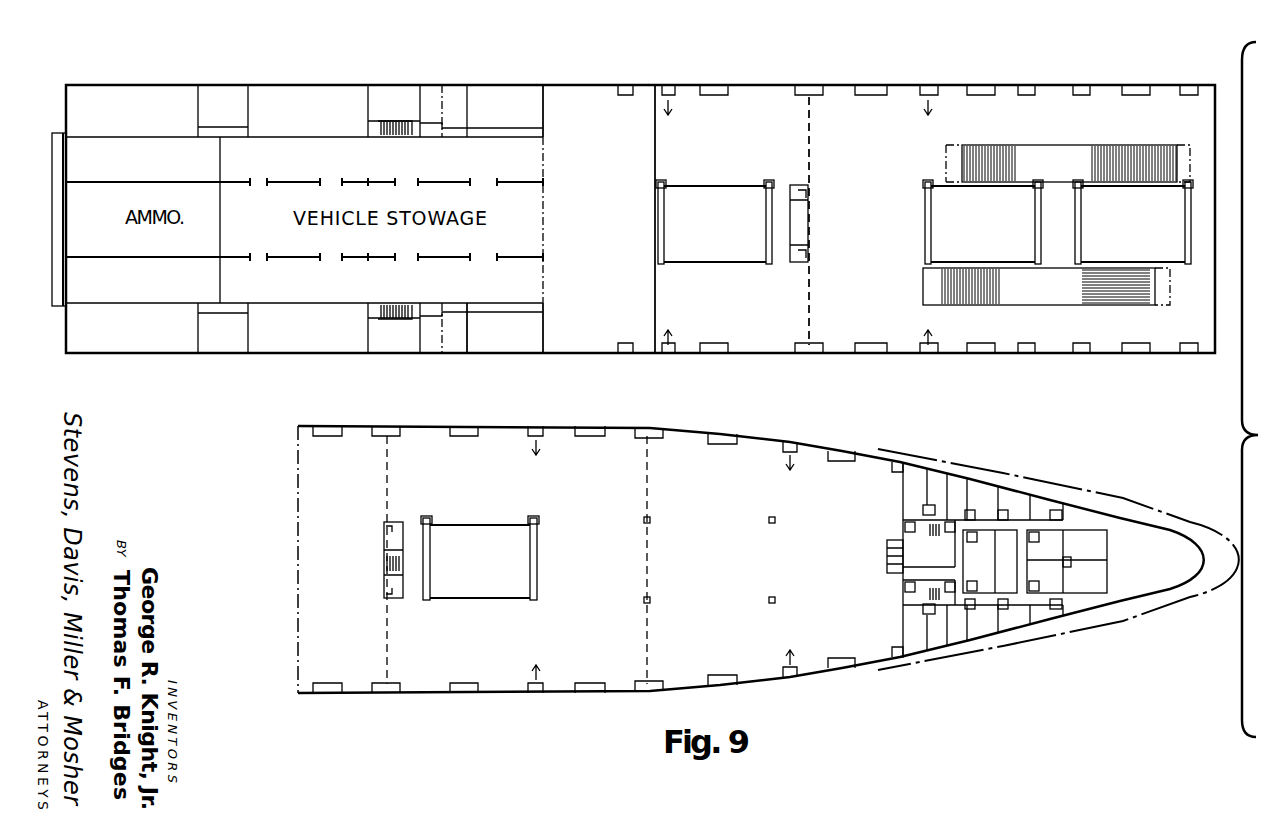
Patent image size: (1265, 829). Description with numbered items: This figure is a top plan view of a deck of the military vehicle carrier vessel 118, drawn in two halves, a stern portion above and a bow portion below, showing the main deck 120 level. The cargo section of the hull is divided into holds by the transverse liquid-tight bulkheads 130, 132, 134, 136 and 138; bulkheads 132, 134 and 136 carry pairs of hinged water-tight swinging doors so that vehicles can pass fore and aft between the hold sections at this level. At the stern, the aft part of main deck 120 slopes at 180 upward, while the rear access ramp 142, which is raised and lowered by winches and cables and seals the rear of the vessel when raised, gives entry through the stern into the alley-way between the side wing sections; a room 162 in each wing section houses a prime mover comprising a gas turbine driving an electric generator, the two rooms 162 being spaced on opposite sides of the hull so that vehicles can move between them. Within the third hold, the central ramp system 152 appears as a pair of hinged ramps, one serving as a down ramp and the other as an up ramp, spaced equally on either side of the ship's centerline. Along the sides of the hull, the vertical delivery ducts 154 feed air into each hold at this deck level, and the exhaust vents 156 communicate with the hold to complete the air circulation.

The vessel 118 is at (776, 84).
The main deck 120 is at (868, 246).
The transverse liquid-tight bulkhead 130 is at (902, 608).
The transverse liquid-tight bulkhead 132 is at (652, 582).
The transverse liquid-tight bulkhead 134 is at (388, 662).
The transverse liquid-tight bulkhead 136 is at (810, 322).
The transverse liquid-tight bulkhead 138 is at (545, 330).
The rear access ramp 142 is at (66, 227).
The central ramp system 152 is at (1100, 142).
The vertical delivery duct 154 is at (933, 350).
The exhaust vent 156 is at (982, 352).
The prime mover room 162 is at (343, 97).
The upward slope of main deck 180 is at (607, 244).